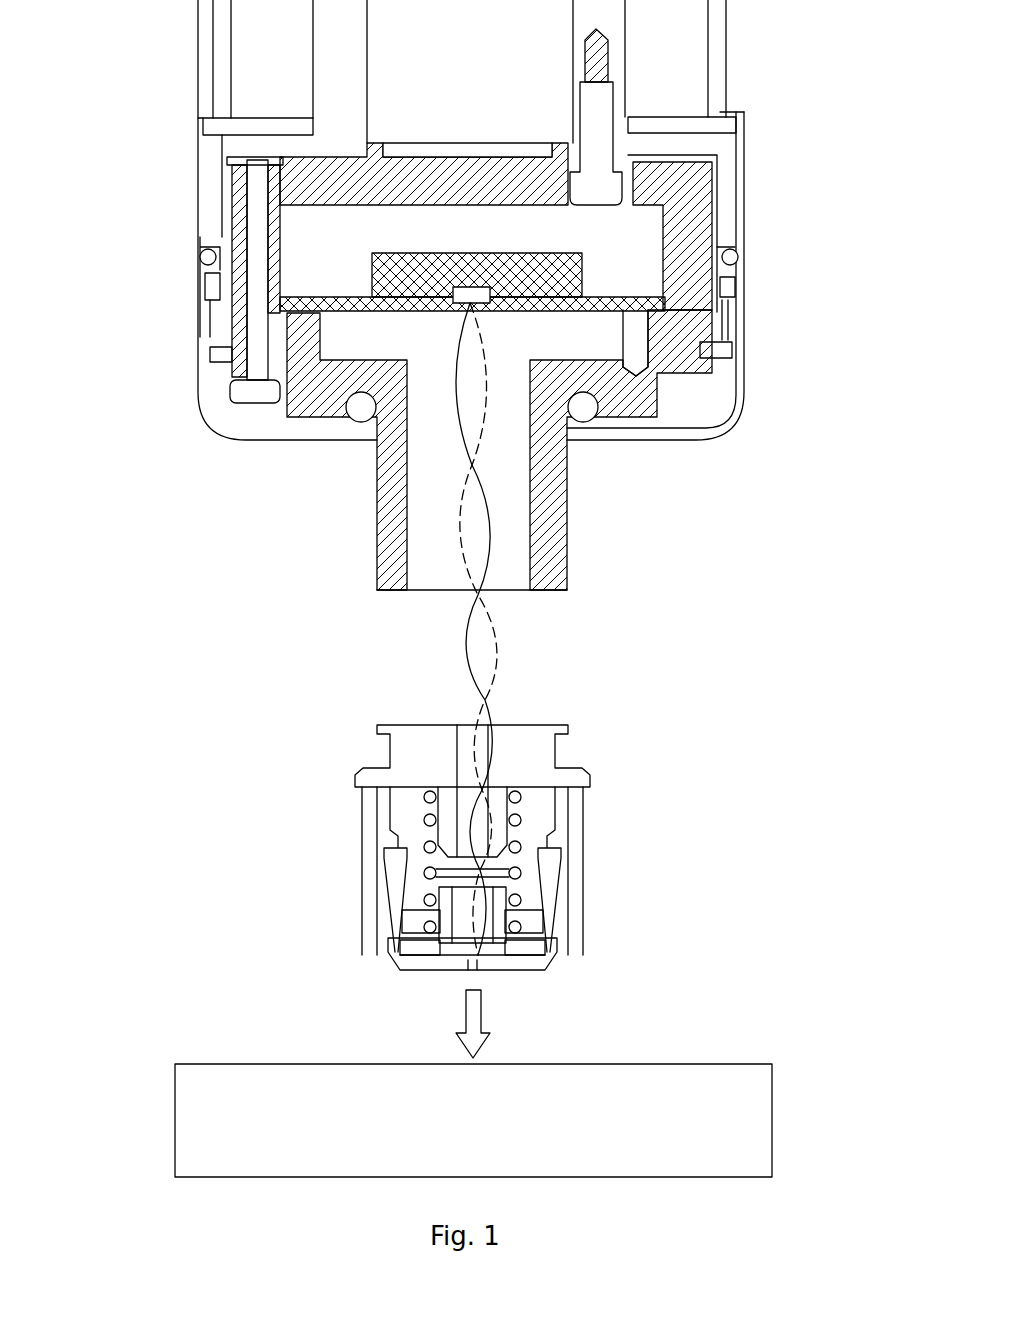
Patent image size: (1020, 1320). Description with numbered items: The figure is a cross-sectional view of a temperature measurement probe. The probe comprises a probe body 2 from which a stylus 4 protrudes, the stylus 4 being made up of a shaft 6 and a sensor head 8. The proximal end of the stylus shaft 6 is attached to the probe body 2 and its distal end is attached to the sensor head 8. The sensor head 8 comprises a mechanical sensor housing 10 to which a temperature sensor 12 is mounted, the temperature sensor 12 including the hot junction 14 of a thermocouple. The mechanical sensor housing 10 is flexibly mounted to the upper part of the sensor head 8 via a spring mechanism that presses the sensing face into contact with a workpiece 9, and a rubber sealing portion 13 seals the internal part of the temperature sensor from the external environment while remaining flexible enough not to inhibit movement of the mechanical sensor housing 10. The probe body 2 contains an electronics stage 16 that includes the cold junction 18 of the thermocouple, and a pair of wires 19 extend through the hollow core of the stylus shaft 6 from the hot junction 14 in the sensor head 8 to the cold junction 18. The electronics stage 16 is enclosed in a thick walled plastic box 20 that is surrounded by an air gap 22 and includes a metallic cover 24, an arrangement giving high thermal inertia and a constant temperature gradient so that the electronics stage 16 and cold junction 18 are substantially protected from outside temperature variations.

The probe body 2 is at (165, 0).
The stylus 4 is at (168, 457).
The stylus shaft 6 is at (565, 482).
The sensor head 8 is at (338, 766).
The workpiece 9 is at (772, 1147).
The mechanical sensor housing 10 is at (505, 912).
The temperature sensor 12 is at (540, 972).
The rubber sealing portion 13 is at (393, 970).
The hot junction 14 is at (477, 953).
The electronics stage 16 is at (560, 293).
The cold junction 18 is at (587, 273).
The wires 19 is at (480, 690).
The thick walled plastic box 20 is at (392, 173).
The air gap 22 is at (258, 162).
The metallic cover 24 is at (737, 330).